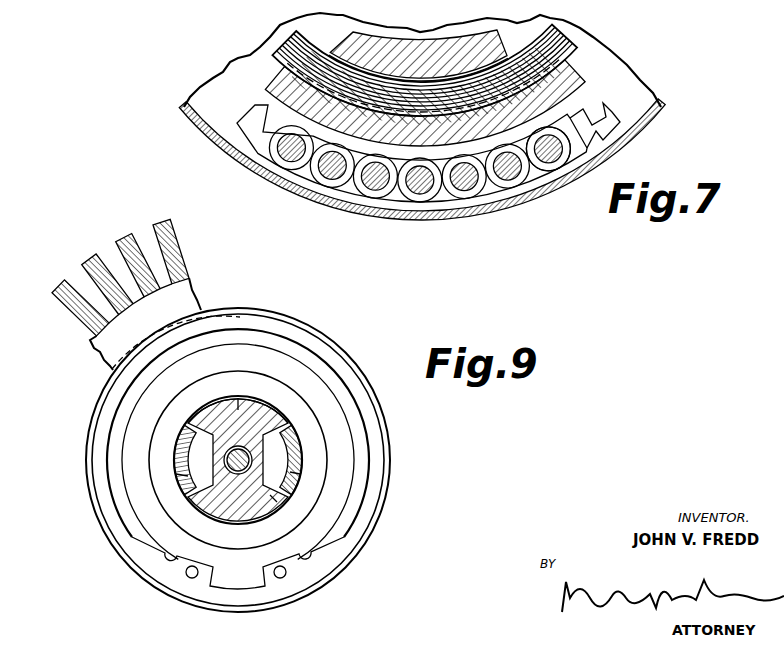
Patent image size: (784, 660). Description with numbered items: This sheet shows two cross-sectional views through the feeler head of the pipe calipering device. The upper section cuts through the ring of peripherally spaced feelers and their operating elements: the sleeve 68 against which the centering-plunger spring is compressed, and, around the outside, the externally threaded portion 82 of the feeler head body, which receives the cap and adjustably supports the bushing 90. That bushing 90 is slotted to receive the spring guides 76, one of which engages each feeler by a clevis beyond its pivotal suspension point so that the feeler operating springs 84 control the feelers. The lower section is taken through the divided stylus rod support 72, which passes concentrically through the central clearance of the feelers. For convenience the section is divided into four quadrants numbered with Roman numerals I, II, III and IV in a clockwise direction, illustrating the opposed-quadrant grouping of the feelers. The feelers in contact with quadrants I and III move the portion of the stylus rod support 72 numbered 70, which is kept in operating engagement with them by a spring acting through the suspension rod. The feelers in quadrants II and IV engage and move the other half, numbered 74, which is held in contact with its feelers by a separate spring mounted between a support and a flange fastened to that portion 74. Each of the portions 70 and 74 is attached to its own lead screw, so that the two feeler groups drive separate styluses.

In FIG. 7, the sleeve 68 is at (440, 63).
In FIG. 7, the externally threaded portion 82 is at (560, 33).
In FIG. 7, the bushing 90 is at (594, 107).
In FIG. 7, the feeler operating springs 84 is at (550, 171).
In FIG. 7, the spring guide 76 is at (505, 178).
In FIG. 9, the stylus rod support portion 70 is at (176, 440).
In FIG. 9, the stylus rod support 72 is at (302, 461).
In FIG. 9, the stylus rod support portion 74 is at (250, 403).
In FIG. 9, the quadrant I is at (176, 474).
In FIG. 9, the quadrant II is at (238, 398).
In FIG. 9, the quadrant III is at (300, 474).
In FIG. 9, the quadrant IV is at (277, 502).